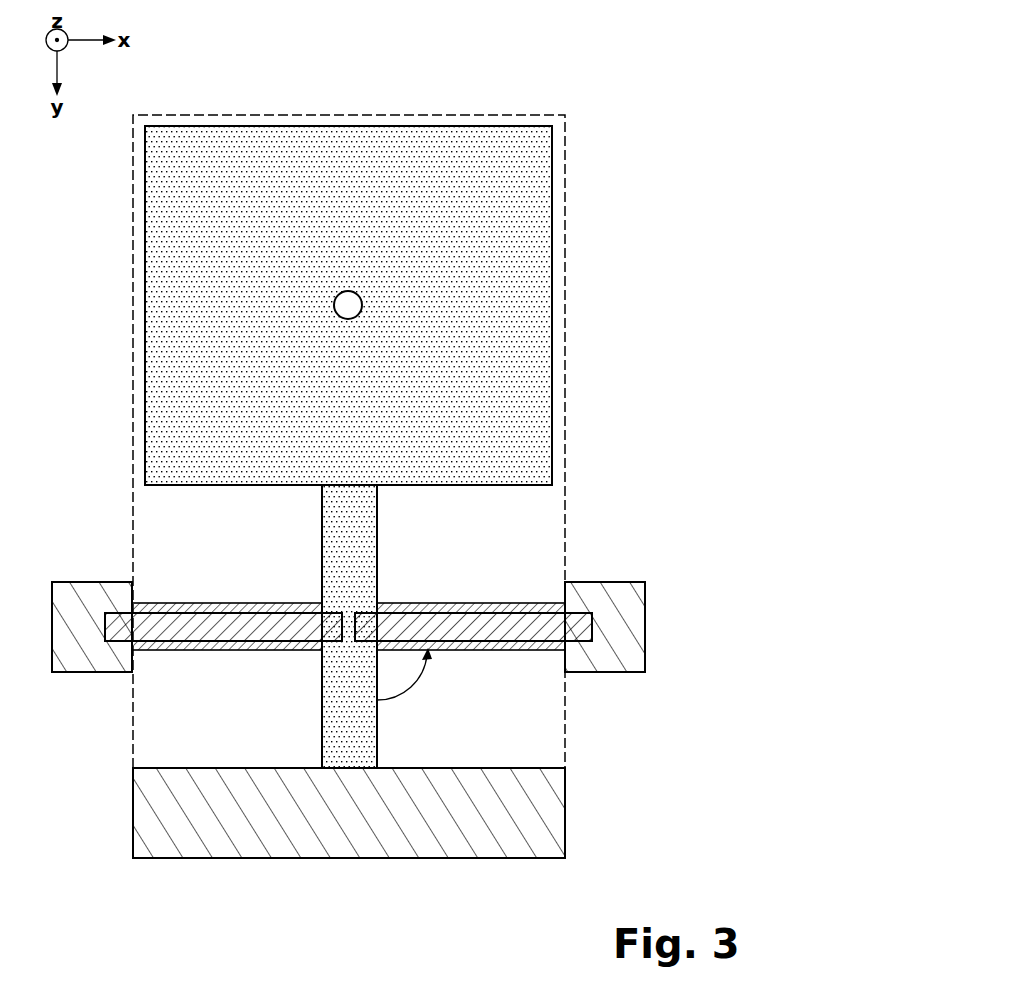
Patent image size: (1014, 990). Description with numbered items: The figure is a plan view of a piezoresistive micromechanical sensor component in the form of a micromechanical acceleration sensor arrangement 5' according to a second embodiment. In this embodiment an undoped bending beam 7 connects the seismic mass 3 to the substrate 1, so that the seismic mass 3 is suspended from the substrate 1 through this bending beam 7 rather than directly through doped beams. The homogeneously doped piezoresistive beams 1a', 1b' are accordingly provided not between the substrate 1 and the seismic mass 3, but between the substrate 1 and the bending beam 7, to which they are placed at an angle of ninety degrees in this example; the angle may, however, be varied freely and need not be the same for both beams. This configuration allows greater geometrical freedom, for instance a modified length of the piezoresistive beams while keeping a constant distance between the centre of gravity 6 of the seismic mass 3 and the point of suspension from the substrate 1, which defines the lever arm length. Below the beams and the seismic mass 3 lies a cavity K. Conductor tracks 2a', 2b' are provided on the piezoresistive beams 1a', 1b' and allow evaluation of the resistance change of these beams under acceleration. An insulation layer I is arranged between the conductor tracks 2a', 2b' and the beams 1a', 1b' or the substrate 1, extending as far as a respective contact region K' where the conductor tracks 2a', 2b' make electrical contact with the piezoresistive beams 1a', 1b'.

The substrate 1 is at (95, 655).
The homogeneously doped piezoresistive beam 1a' is at (227, 591).
The homogeneously doped piezoresistive beam 1b' is at (471, 591).
The conductor track 2a' is at (223, 655).
The conductor track 2b' is at (473, 657).
The seismic mass 3 is at (552, 283).
The micromechanical acceleration sensor arrangement 5' is at (406, 390).
The centre of gravity 6 is at (334, 305).
The undoped bending beam 7 is at (360, 512).
The cavity K is at (567, 512).
The contact region K' is at (343, 576).
The insulation layer I is at (120, 610).